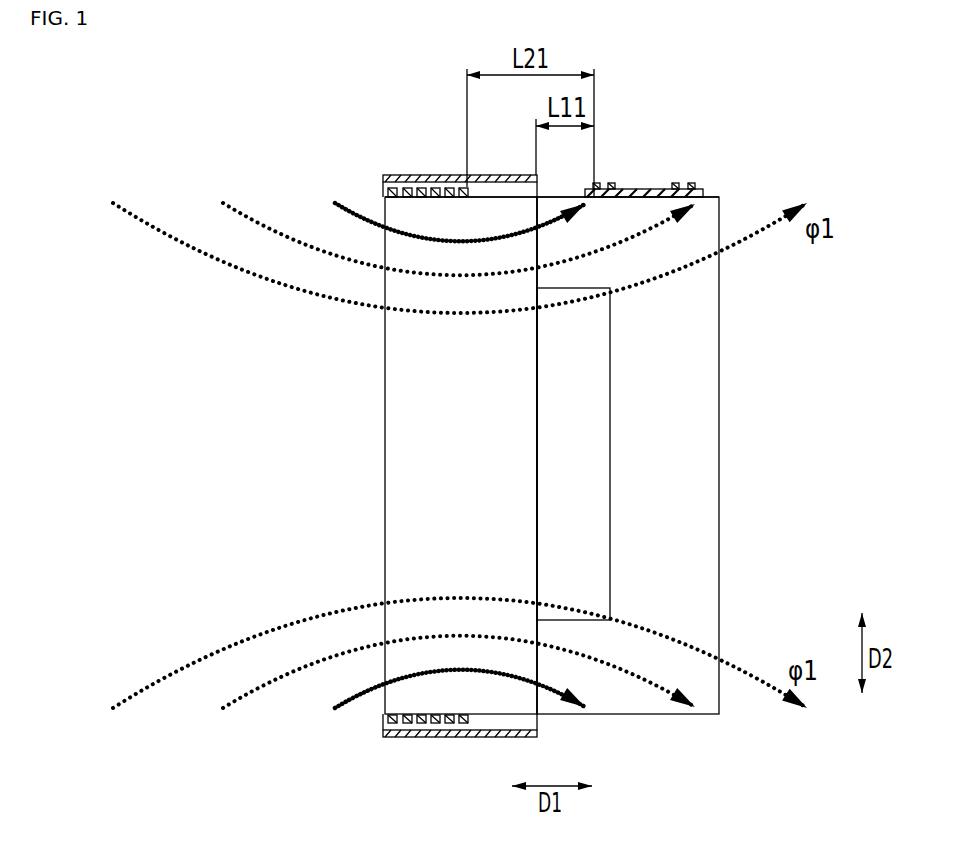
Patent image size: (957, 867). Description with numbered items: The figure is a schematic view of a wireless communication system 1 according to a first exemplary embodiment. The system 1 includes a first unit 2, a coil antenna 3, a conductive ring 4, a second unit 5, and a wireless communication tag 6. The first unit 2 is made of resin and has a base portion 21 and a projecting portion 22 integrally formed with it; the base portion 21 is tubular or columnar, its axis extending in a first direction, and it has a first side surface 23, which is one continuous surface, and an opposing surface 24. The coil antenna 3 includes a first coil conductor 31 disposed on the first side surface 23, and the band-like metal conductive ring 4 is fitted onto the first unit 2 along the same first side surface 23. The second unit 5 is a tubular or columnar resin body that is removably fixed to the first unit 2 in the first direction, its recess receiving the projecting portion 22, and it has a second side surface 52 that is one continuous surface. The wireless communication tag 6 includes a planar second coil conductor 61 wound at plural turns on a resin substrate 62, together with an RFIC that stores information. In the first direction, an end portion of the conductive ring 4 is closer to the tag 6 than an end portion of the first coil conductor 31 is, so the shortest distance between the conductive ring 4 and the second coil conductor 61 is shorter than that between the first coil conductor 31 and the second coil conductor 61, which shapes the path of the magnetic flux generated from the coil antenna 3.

The wireless communication system 1 is at (727, 78).
The first unit 2 is at (333, 422).
The base portion 21 is at (417, 419).
The projecting portion 22 is at (545, 497).
The first side surface 23 is at (502, 196).
The opposing surface 24 is at (537, 375).
The coil antenna 3 is at (428, 429).
The first coil conductor 31 is at (422, 189).
The conductive ring 4 is at (394, 179).
The second unit 5 is at (721, 510).
The second side surface 52 is at (710, 196).
The wireless communication tag 6 is at (680, 136).
The second coil conductor 61 is at (609, 184).
The substrate 62 is at (660, 189).